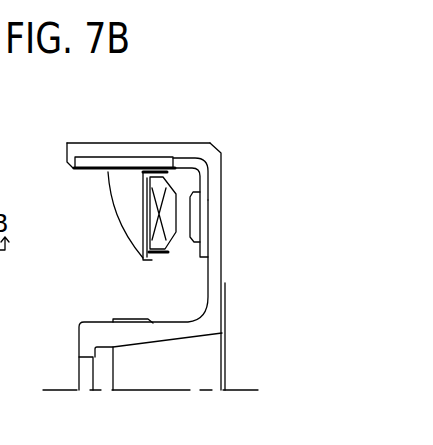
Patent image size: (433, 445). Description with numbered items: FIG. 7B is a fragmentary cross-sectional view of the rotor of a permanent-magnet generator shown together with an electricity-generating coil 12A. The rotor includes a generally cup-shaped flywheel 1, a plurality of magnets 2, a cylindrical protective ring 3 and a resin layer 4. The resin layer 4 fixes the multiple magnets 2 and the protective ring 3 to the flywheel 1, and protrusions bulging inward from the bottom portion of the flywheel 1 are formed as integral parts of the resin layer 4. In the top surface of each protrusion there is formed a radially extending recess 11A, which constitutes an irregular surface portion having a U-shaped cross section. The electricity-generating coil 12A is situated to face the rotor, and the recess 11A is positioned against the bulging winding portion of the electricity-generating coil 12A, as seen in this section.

The flywheel 1 is at (215, 155).
The magnets 2 is at (128, 162).
The protective ring 3 is at (93, 162).
The resin layer 4 is at (193, 160).
The recess 11A is at (197, 207).
The electricity-generating coil 12A is at (143, 197).